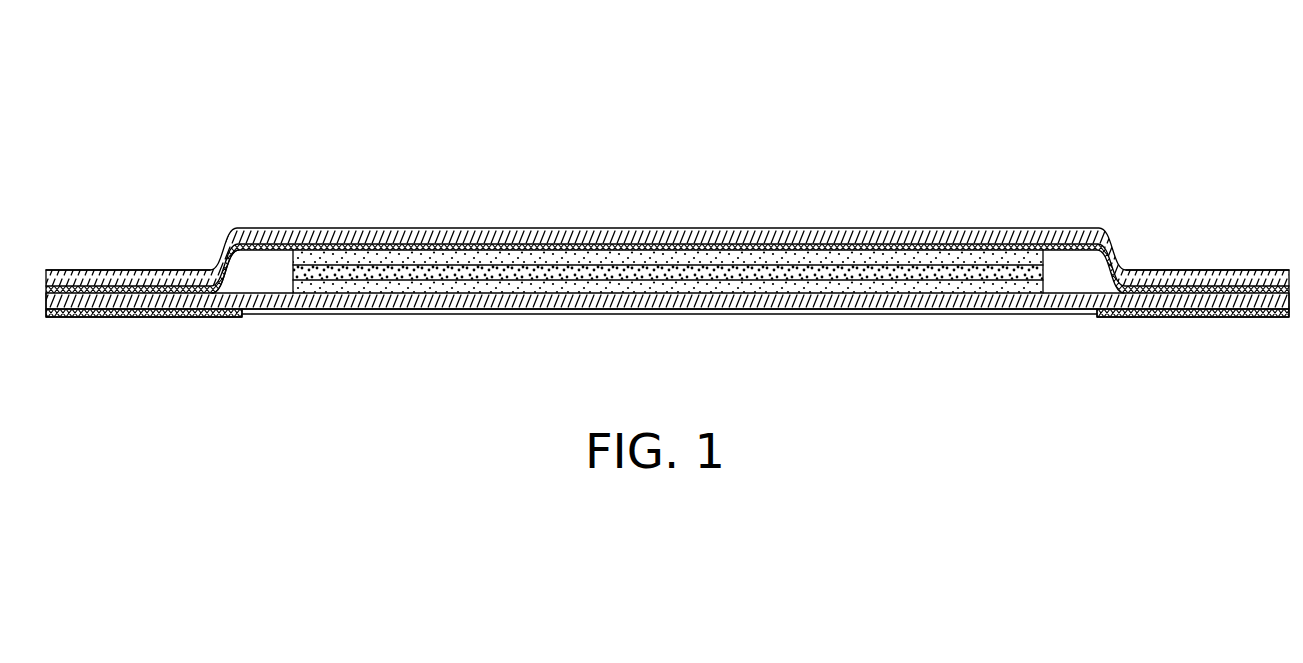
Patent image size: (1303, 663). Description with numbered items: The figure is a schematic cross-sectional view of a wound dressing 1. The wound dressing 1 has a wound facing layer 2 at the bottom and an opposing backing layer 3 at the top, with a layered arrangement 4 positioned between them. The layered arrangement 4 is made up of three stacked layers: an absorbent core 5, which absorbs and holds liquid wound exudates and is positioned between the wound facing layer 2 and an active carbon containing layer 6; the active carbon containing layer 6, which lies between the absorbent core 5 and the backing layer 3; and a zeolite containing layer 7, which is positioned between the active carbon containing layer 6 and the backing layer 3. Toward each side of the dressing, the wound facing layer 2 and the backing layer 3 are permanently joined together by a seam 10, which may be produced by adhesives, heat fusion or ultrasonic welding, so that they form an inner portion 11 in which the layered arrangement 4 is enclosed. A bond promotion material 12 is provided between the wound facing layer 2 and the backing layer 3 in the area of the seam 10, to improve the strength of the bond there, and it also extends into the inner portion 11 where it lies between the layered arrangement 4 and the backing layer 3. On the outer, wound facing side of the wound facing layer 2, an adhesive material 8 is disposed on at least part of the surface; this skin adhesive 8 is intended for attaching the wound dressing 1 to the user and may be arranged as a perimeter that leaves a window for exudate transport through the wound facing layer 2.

The wound dressing 1 is at (353, 98).
The wound facing layer 2 is at (612, 303).
The backing layer 3 is at (461, 236).
The layered arrangement 4 is at (838, 146).
The absorbent core 5 is at (853, 287).
The active carbon containing layer 6 is at (798, 272).
The zeolite containing layer 7 is at (738, 257).
The adhesive material 8 is at (133, 320).
The seam 10 is at (102, 267).
The inner portion 11 is at (263, 277).
The bond promotion material 12 is at (564, 247).